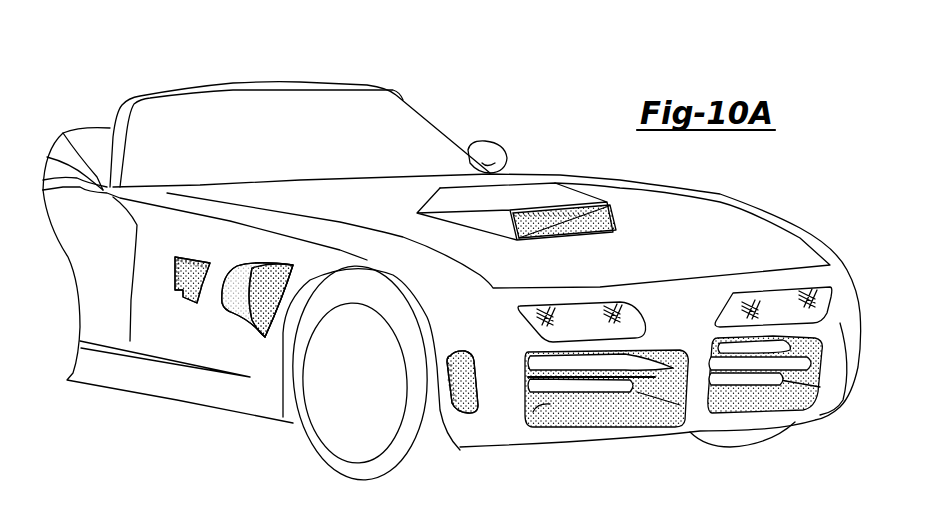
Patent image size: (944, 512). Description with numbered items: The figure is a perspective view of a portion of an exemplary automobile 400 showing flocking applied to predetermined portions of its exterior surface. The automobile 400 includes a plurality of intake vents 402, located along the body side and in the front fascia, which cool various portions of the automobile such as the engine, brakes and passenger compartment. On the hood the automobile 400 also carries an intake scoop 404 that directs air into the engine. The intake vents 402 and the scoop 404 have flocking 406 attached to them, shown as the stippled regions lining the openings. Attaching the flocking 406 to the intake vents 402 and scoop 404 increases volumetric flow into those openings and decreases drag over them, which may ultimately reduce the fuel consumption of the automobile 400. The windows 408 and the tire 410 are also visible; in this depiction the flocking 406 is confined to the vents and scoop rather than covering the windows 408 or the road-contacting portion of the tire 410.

The automobile 400 is at (503, 91).
The intake vent 402 is at (264, 336).
The intake scoop 404 is at (613, 224).
The flocking 406 is at (560, 228).
The windows 408 is at (319, 135).
The tire 410 is at (440, 464).